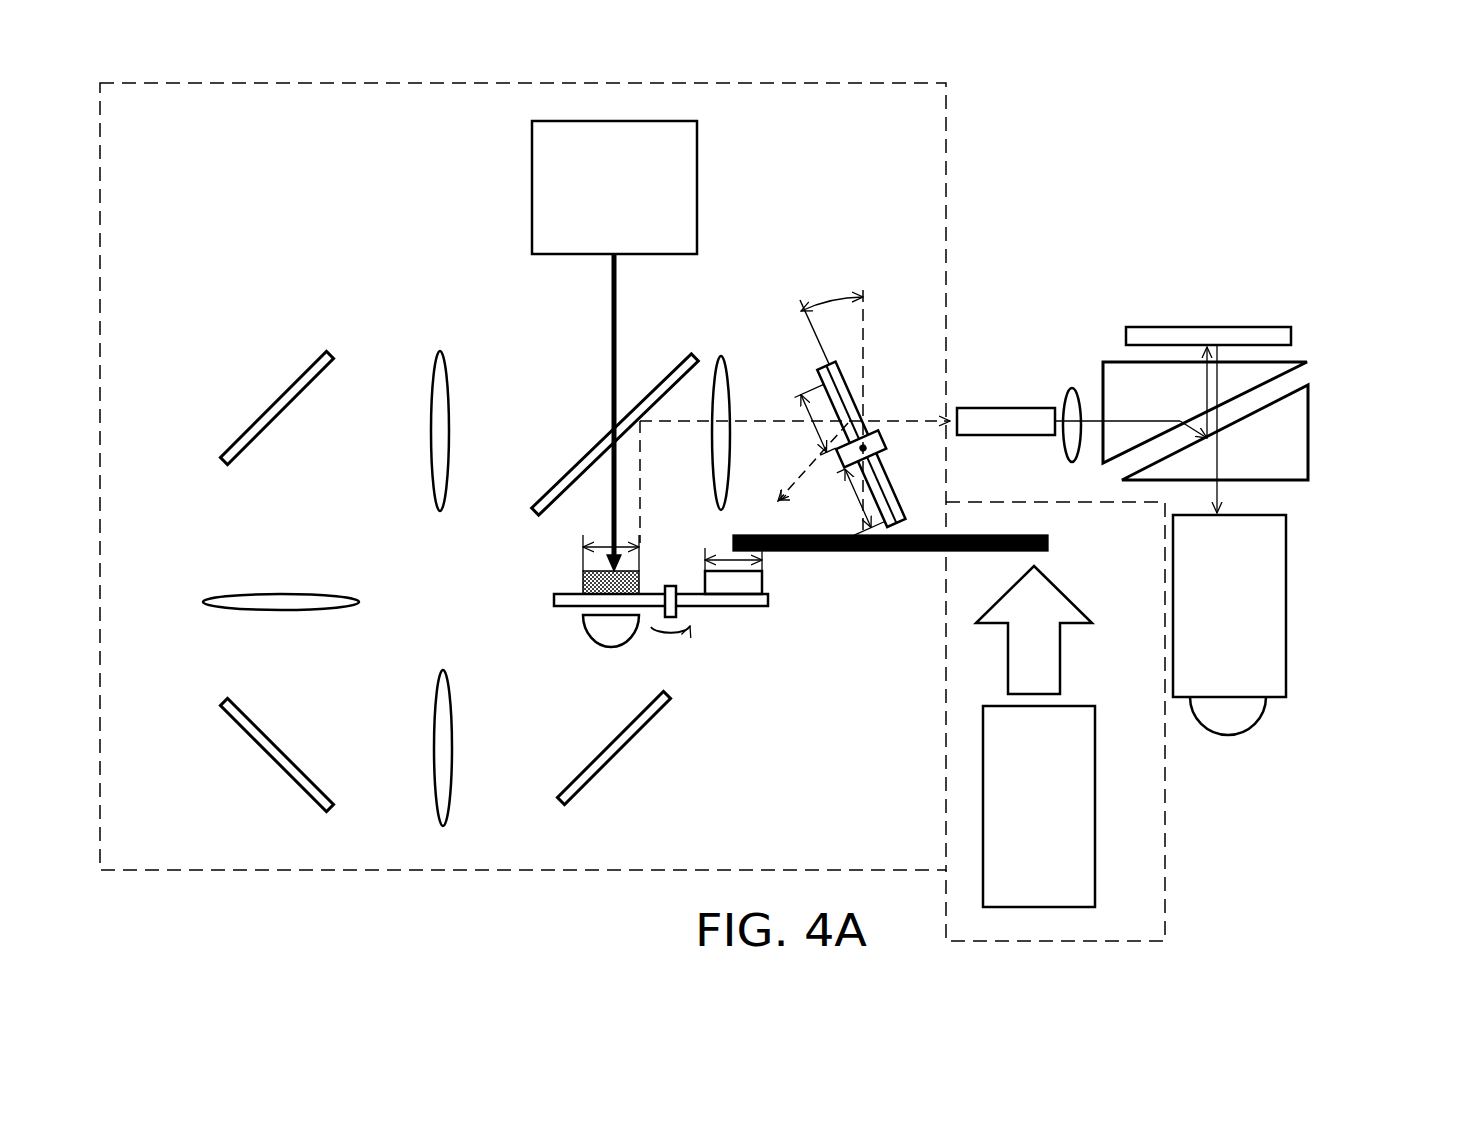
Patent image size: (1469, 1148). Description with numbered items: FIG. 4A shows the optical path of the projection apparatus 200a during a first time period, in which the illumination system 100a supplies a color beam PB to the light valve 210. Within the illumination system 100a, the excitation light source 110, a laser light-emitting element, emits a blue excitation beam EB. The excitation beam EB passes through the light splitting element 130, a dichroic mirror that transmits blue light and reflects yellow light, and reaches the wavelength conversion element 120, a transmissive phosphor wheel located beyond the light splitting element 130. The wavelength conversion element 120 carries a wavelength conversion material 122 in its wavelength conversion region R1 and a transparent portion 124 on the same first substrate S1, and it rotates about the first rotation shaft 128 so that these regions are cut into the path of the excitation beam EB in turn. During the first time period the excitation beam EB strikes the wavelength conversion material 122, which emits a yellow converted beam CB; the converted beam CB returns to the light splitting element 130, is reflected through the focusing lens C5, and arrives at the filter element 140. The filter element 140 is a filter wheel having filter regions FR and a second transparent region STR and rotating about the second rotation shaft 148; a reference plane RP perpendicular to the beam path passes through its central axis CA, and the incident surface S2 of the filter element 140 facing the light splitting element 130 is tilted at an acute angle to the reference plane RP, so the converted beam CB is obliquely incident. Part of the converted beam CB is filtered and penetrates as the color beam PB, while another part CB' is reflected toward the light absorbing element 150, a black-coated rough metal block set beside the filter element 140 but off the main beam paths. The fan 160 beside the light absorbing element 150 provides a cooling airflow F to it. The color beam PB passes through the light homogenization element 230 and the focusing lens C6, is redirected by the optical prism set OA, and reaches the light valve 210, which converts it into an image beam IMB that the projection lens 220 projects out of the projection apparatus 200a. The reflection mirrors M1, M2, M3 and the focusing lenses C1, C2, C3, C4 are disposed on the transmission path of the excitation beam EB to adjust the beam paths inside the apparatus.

The illumination system 100a is at (882, 83).
The projection apparatus 200a is at (1357, 190).
The excitation light source 110 is at (698, 183).
The wavelength conversion element 120 is at (766, 644).
The wavelength conversion material 122 is at (583, 577).
The transparent portion 124 is at (762, 590).
The first rotation shaft 128 is at (677, 612).
The light splitting element 130 is at (686, 352).
The filter element 140 is at (927, 510).
The second rotation shaft 148 is at (882, 443).
The light absorbing element 150 is at (1041, 551).
The fan 160 is at (1082, 807).
The light valve 210 is at (1252, 328).
The projection lens 220 is at (1290, 612).
The light homogenization element 230 is at (983, 415).
The excitation beam EB is at (612, 296).
The converted beam CB is at (793, 482).
The reflected part of converted beam CB' is at (794, 468).
The color beam PB is at (905, 420).
The image beam IMB is at (1218, 496).
The optical prism set OA is at (1295, 428).
The central axis CA is at (878, 455).
The filter region FR is at (816, 425).
The second transparent region STR is at (847, 499).
The wavelength conversion region R1 is at (583, 537).
The first substrate S1 is at (554, 600).
The second surface S2 is at (838, 365).
The reference plane RP is at (862, 370).
The cooling airflow F is at (1050, 657).
The focusing lens C1 is at (440, 360).
The focusing lens C2 is at (610, 643).
The focusing lens C3 is at (440, 740).
The focusing lens C4 is at (205, 600).
The focusing lens C5 is at (723, 360).
The focusing lens C6 is at (1072, 395).
The reflection mirror M1 is at (620, 760).
The reflection mirror M2 is at (262, 748).
The reflection mirror M3 is at (273, 410).